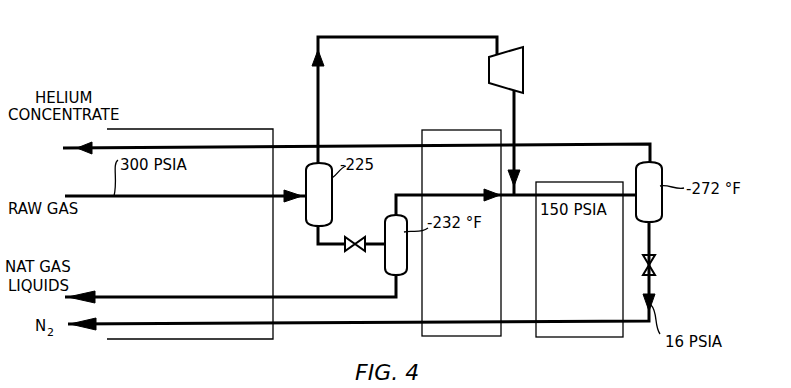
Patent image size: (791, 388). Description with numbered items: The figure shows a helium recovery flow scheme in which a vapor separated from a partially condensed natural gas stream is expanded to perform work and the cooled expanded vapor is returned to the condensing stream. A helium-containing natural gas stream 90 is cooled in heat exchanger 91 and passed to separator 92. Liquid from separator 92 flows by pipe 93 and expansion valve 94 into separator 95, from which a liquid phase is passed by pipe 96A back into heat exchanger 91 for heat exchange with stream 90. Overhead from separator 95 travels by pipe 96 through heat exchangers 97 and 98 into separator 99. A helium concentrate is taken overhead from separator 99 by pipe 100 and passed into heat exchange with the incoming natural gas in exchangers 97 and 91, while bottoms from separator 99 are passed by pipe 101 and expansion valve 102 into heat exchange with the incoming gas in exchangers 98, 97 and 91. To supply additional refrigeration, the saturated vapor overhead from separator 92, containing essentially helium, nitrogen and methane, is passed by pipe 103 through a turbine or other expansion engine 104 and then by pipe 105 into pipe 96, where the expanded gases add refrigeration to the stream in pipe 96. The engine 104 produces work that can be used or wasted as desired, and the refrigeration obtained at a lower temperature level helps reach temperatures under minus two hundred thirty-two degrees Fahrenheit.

The natural gas stream 90 is at (106, 195).
The heat exchanger 91 is at (245, 276).
The separator 92 is at (326, 187).
The pipe 93 is at (317, 241).
The expansion valve 94 is at (338, 250).
The separator 95 is at (401, 251).
The pipe 96 is at (568, 194).
The pipe 96A is at (129, 296).
The heat exchanger 97 is at (472, 306).
The heat exchanger 98 is at (594, 297).
The separator 99 is at (652, 173).
The pipe 100 is at (532, 143).
The pipe 101 is at (652, 237).
The expansion valve 102 is at (656, 270).
The pipe 103 is at (320, 98).
The expansion engine 104 is at (517, 62).
The pipe 105 is at (516, 108).